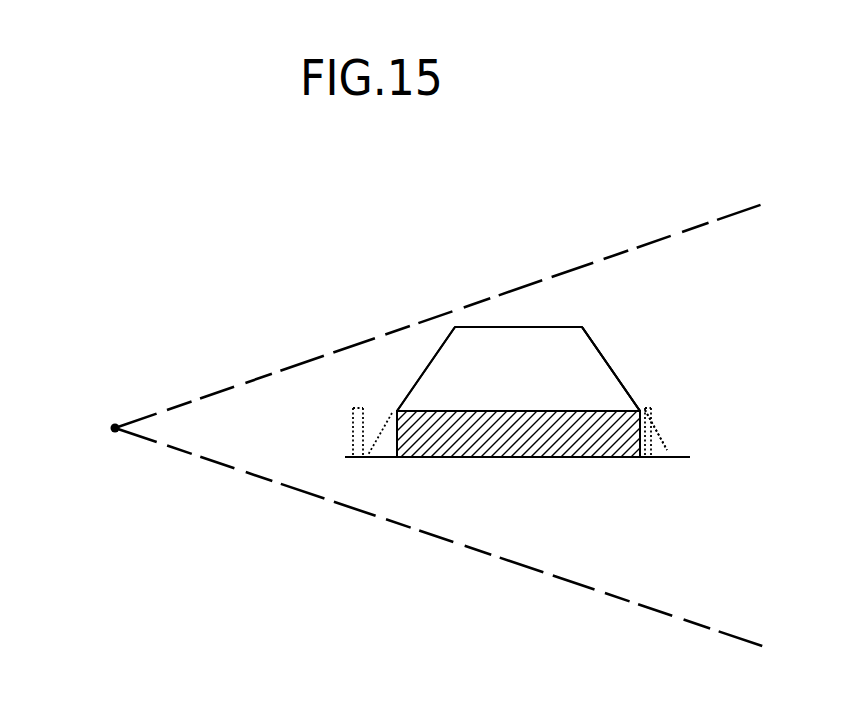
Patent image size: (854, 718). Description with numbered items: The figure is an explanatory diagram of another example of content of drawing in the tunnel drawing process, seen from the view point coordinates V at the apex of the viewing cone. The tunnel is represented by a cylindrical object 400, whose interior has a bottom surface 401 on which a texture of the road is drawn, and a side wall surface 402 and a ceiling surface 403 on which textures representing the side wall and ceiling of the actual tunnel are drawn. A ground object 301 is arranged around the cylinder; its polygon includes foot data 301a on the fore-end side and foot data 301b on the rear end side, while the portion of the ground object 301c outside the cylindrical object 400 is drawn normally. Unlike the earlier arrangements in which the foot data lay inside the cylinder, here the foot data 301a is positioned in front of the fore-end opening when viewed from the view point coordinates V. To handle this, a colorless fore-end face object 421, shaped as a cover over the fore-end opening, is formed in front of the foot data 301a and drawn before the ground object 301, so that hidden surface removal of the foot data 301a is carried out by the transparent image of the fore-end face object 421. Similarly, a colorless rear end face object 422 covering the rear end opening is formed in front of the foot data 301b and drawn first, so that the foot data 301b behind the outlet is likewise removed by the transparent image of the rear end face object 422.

The view point coordinates V is at (99, 430).
The cylindrical object 400 is at (518, 396).
The ground object 301 is at (595, 335).
The foot data 301a is at (392, 413).
The foot data 301b is at (667, 450).
The ground object 301c is at (627, 390).
The bottom surface 401 is at (452, 446).
The side wall surface 402 is at (533, 455).
The ceiling surface 403 is at (592, 424).
The fore-end face object 421 is at (352, 405).
The rear end face object 422 is at (645, 408).